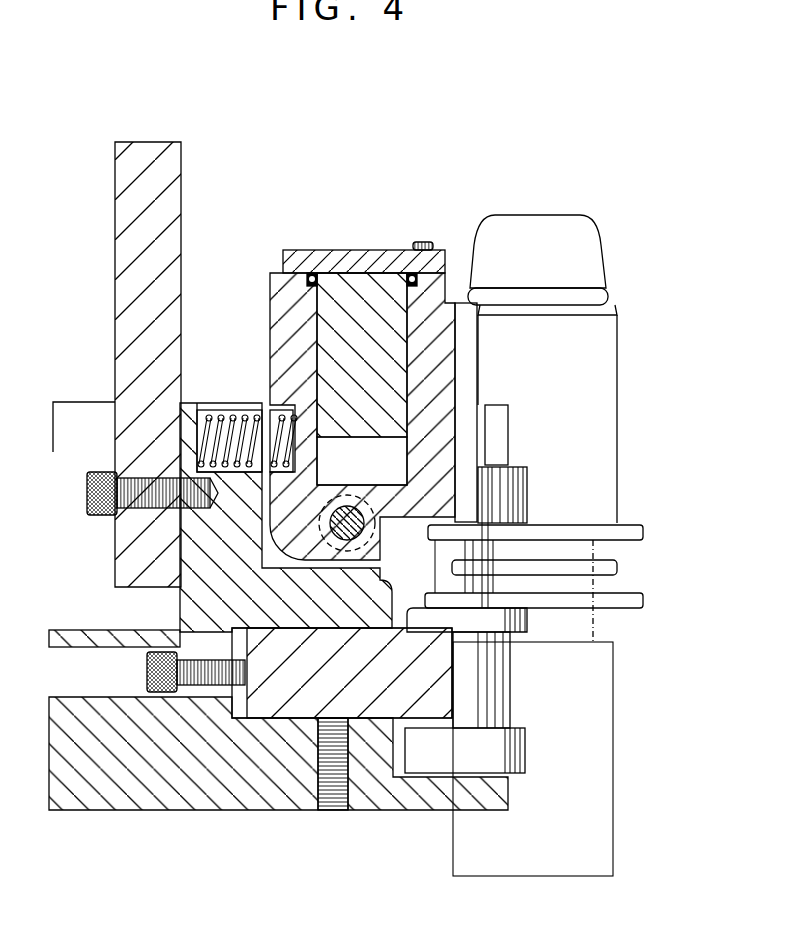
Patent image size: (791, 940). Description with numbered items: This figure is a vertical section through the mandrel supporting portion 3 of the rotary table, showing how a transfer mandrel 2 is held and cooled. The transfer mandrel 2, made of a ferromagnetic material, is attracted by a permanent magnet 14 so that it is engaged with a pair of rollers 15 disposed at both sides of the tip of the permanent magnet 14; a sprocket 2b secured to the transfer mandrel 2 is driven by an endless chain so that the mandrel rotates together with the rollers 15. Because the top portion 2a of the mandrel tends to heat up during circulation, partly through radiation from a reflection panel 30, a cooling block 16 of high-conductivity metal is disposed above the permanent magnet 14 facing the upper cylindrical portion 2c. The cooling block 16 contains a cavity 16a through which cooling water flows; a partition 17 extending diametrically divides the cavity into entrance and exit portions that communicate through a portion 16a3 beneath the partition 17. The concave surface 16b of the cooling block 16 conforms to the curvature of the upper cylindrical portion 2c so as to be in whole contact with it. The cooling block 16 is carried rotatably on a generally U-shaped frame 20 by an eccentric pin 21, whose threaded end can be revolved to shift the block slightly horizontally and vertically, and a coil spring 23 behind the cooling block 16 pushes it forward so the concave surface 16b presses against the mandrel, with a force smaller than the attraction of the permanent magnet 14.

The transfer mandrel 2 is at (545, 428).
The top portion 2a is at (596, 262).
The sprocket 2b is at (616, 573).
The upper cylindrical portion 2c is at (610, 487).
The mandrel supporting portion 3 is at (220, 812).
The permanent magnet 14 is at (397, 635).
The rollers 15 is at (508, 686).
The cooling block 16 is at (267, 325).
The cavity 16a is at (347, 432).
The communicating portion 16a3 is at (396, 480).
The concave surface 16b is at (464, 316).
The partition 17 is at (353, 282).
The U-shaped frame 20 is at (507, 418).
The eccentric pin 21 is at (332, 516).
The coil spring 23 is at (233, 408).
The reflection panel 30 is at (181, 160).